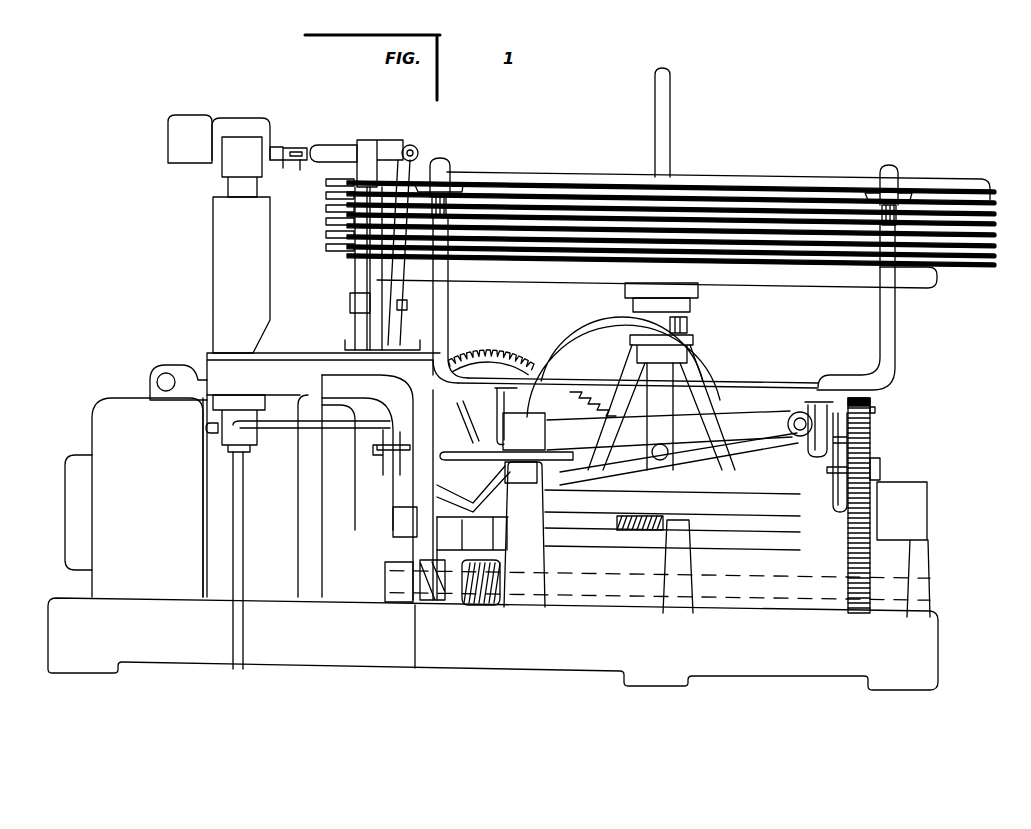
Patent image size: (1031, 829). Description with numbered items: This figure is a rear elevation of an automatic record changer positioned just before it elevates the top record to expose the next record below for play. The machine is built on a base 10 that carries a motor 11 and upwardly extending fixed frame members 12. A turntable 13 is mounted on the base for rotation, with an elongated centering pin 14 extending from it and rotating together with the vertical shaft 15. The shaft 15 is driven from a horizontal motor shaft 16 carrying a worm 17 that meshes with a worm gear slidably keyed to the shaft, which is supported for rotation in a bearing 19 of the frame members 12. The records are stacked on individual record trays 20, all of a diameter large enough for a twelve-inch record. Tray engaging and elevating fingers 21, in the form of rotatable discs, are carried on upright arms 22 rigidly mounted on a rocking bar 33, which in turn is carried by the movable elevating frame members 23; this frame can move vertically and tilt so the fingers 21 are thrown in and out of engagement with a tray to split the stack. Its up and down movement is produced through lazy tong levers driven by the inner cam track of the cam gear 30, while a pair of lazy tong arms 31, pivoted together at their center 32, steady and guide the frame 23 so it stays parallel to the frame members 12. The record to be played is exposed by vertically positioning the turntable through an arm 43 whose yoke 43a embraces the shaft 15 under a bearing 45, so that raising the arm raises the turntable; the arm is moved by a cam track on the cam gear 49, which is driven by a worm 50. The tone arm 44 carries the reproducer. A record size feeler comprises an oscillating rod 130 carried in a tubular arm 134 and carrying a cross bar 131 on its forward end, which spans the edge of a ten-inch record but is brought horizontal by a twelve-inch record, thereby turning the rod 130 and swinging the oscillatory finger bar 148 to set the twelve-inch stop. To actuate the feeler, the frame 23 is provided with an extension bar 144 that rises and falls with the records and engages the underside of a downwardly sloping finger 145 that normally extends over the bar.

The base 10 is at (582, 663).
The motor 11 is at (110, 428).
The frame members 12 is at (712, 360).
The turntable 13 is at (793, 281).
The centering pin 14 is at (668, 143).
The shaft 15 is at (660, 416).
The motor shaft 16 is at (388, 522).
The worm 17 is at (638, 536).
The bearing 19 is at (690, 348).
The record trays 20 is at (945, 193).
The tray engaging and elevating fingers 21 is at (448, 183).
The upright arms 22 is at (438, 320).
The movable frame members 23 is at (872, 430).
The cam gear 30 is at (871, 400).
The lazy tong arms 31 is at (763, 430).
The pivot 32 is at (669, 453).
The rocking bar 33 is at (498, 410).
The arm 43 is at (590, 323).
The yoke 43a is at (688, 320).
The tone arm 44 is at (205, 130).
The bearing 45 is at (690, 310).
The cam gear 49 is at (517, 358).
The worm 50 is at (485, 607).
The oscillating rod 130 is at (300, 150).
The cross bar 131 is at (302, 162).
The tubular arm 134 is at (337, 152).
The extension bar 144 is at (452, 460).
The finger 145 is at (470, 437).
The oscillatory finger bar 148 is at (387, 280).